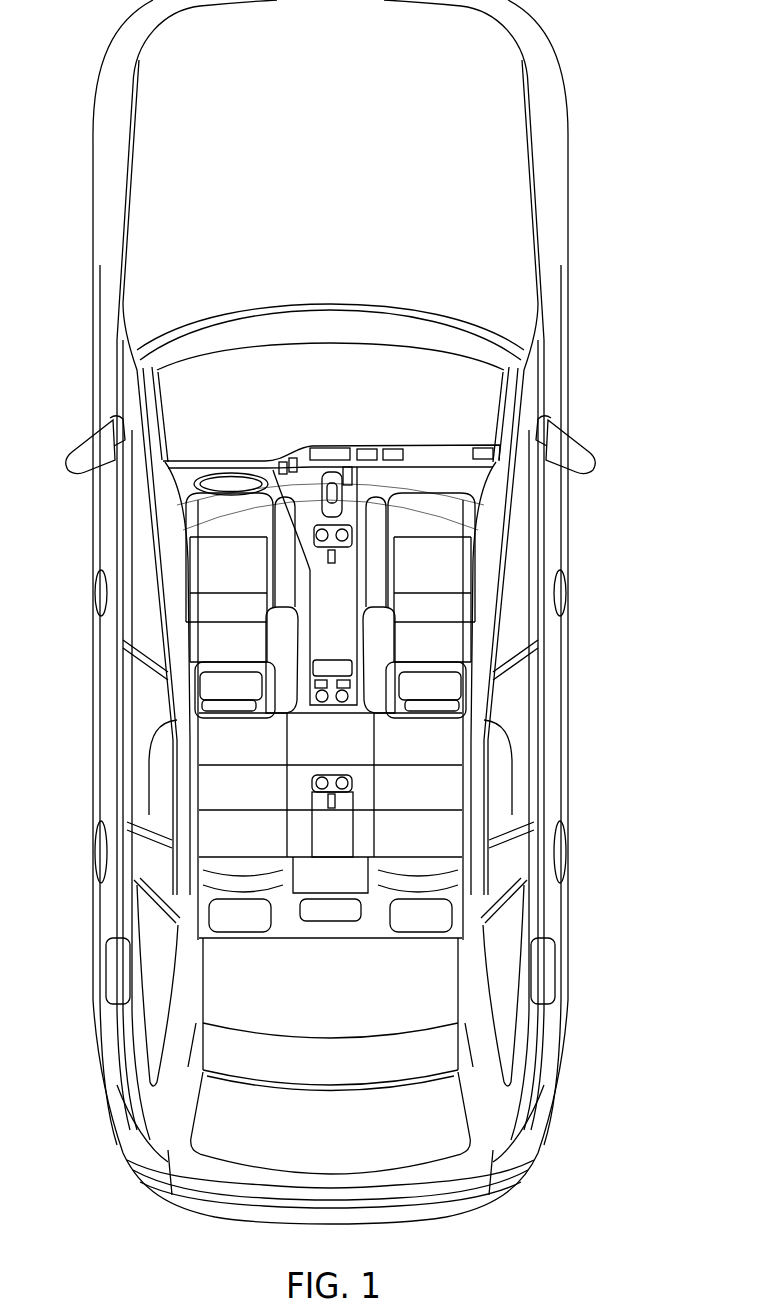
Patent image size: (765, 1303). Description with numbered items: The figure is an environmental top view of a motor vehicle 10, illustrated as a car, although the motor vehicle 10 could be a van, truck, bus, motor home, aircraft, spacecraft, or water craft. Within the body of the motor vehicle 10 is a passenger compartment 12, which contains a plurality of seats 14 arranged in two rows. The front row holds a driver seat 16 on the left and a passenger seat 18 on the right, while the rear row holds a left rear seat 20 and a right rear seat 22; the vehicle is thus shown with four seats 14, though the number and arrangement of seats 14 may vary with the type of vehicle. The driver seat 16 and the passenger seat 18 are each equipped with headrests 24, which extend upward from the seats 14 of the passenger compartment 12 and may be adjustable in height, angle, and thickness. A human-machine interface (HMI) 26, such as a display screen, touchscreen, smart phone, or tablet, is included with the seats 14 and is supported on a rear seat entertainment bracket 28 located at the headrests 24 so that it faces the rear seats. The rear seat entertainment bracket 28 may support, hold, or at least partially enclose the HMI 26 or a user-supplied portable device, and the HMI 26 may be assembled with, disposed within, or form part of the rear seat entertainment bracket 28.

The motor vehicle 10 is at (577, 97).
The passenger compartment 12 is at (408, 380).
The seats 14 is at (333, 712).
The driver seat 16 is at (251, 577).
The passenger seat 18 is at (458, 577).
The left rear seat 20 is at (264, 797).
The right rear seat 22 is at (441, 797).
The headrests 24 is at (238, 677).
The human-machine interface (HMI) 26 is at (331, 697).
The rear seat entertainment bracket 28 is at (230, 697).